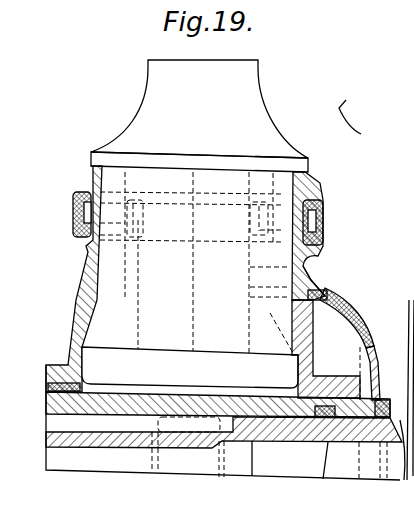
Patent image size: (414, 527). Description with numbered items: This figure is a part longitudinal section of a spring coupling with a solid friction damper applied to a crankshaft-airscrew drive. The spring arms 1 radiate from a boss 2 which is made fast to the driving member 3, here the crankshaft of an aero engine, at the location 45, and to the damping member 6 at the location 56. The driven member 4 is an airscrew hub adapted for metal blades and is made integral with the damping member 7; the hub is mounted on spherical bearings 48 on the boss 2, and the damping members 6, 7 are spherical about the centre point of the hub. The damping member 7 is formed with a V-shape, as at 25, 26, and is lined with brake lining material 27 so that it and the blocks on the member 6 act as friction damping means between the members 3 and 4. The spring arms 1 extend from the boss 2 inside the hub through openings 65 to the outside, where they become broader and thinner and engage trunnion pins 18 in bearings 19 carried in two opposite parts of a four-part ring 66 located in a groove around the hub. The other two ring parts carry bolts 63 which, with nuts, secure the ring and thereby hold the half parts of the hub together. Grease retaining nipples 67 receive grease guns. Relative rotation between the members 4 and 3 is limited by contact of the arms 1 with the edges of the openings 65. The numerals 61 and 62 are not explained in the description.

The spring arms 1 is at (138, 313).
The boss 2 is at (75, 397).
The driving member 3 is at (299, 434).
The driven member 4 is at (92, 277).
The damping member 6 is at (345, 314).
The damping member 7 is at (320, 287).
The trunnion pins 18 is at (163, 232).
The bearings 19 is at (403, 262).
The V-shape 25 is at (363, 340).
The V-shape 26 is at (338, 303).
The brake lining material 27 is at (360, 313).
The fastening to crankshaft 45 is at (267, 433).
The spherical bearings 48 is at (52, 372).
The fastening to damping member 56 is at (380, 433).
The bell housing 61 is at (247, 92).
The link 62 is at (376, 114).
The bolts 63 is at (281, 207).
The openings 65 is at (153, 457).
The four-part ring 66 is at (82, 198).
The grease retaining nipples 67 is at (413, 185).